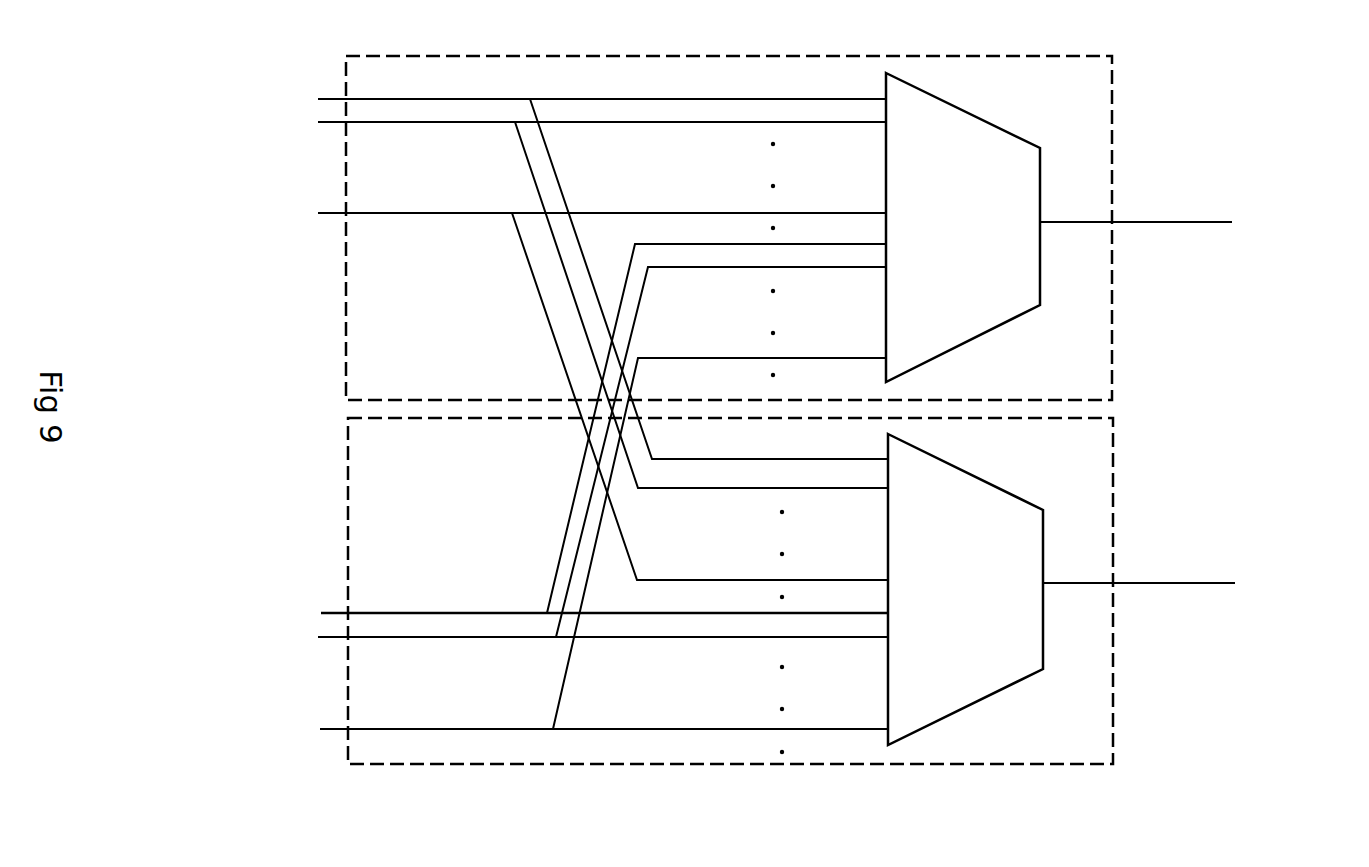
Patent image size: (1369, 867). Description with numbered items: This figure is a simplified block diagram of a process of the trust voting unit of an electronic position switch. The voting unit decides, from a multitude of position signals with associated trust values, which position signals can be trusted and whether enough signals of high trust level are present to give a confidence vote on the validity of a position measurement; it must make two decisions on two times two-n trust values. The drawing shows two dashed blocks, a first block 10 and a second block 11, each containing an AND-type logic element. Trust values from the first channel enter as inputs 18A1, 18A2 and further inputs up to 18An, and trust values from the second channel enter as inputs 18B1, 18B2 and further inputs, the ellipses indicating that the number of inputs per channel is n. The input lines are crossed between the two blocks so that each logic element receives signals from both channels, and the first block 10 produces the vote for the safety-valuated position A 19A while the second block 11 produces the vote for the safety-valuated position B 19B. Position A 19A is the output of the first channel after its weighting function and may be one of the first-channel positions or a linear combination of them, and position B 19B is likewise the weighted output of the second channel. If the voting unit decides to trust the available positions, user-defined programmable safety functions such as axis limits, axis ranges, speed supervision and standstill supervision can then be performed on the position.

The first voting unit (AND gate A) 10 is at (1103, 158).
The second voting unit (AND gate B) 11 is at (1100, 523).
The first input signal of channel A 18A1 is at (535, 265).
The second input signal of channel A 18A2 is at (535, 298).
The n-th input signal of channel A 18An is at (535, 390).
The first input signal of channel B 18B1 is at (539, 430).
The second input signal of channel B 18B2 is at (538, 460).
The safety-valuated position A 19A is at (1189, 241).
The safety-valuated position B 19B is at (1204, 619).